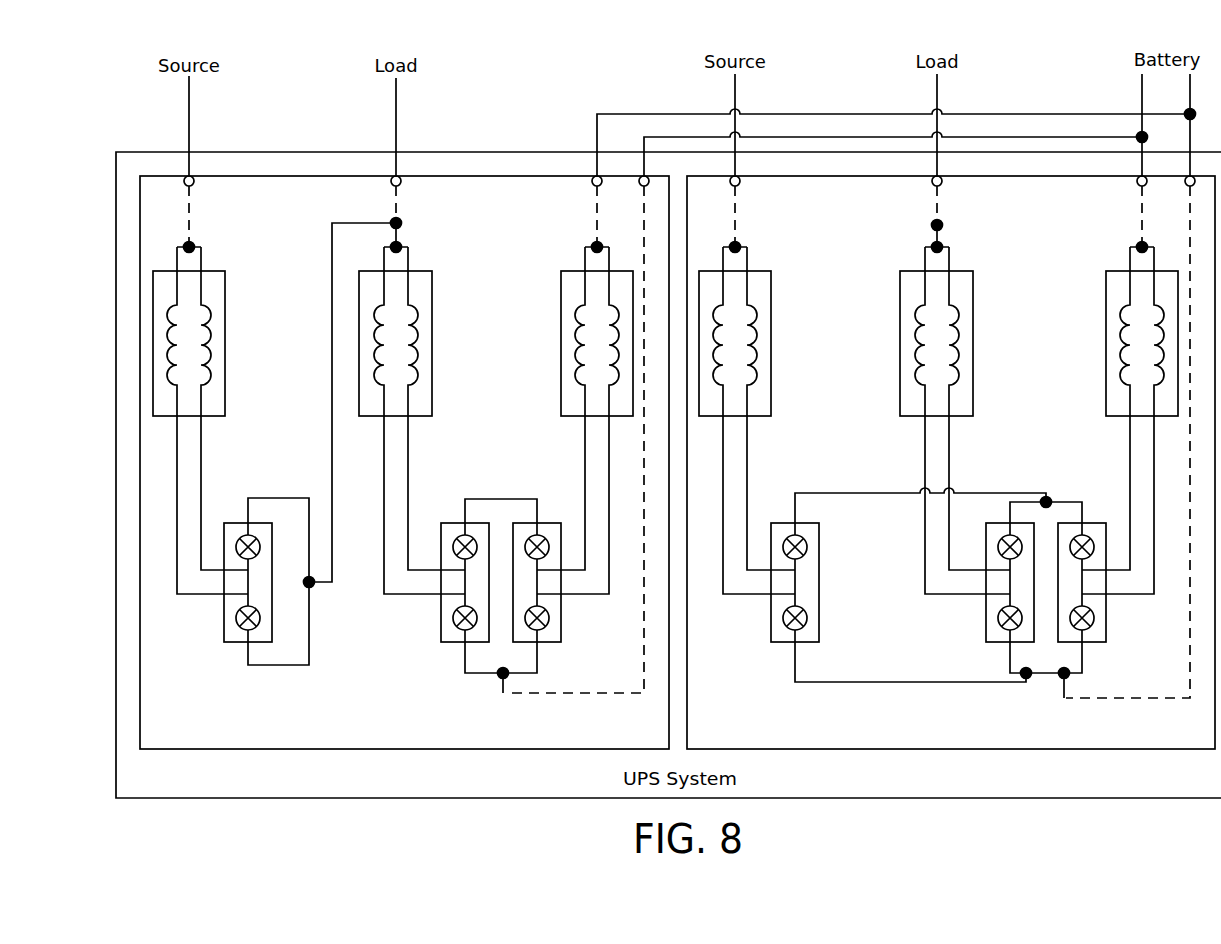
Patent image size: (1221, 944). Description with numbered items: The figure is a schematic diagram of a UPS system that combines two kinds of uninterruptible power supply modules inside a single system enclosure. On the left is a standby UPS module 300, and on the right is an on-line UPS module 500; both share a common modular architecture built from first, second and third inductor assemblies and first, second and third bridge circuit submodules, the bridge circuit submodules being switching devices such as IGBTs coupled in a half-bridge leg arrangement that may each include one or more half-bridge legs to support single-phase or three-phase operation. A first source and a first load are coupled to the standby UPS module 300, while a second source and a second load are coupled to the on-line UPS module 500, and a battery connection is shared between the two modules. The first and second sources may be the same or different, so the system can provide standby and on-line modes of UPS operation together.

The standby UPS module 300 is at (406, 176).
The on-line UPS module 500 is at (951, 176).